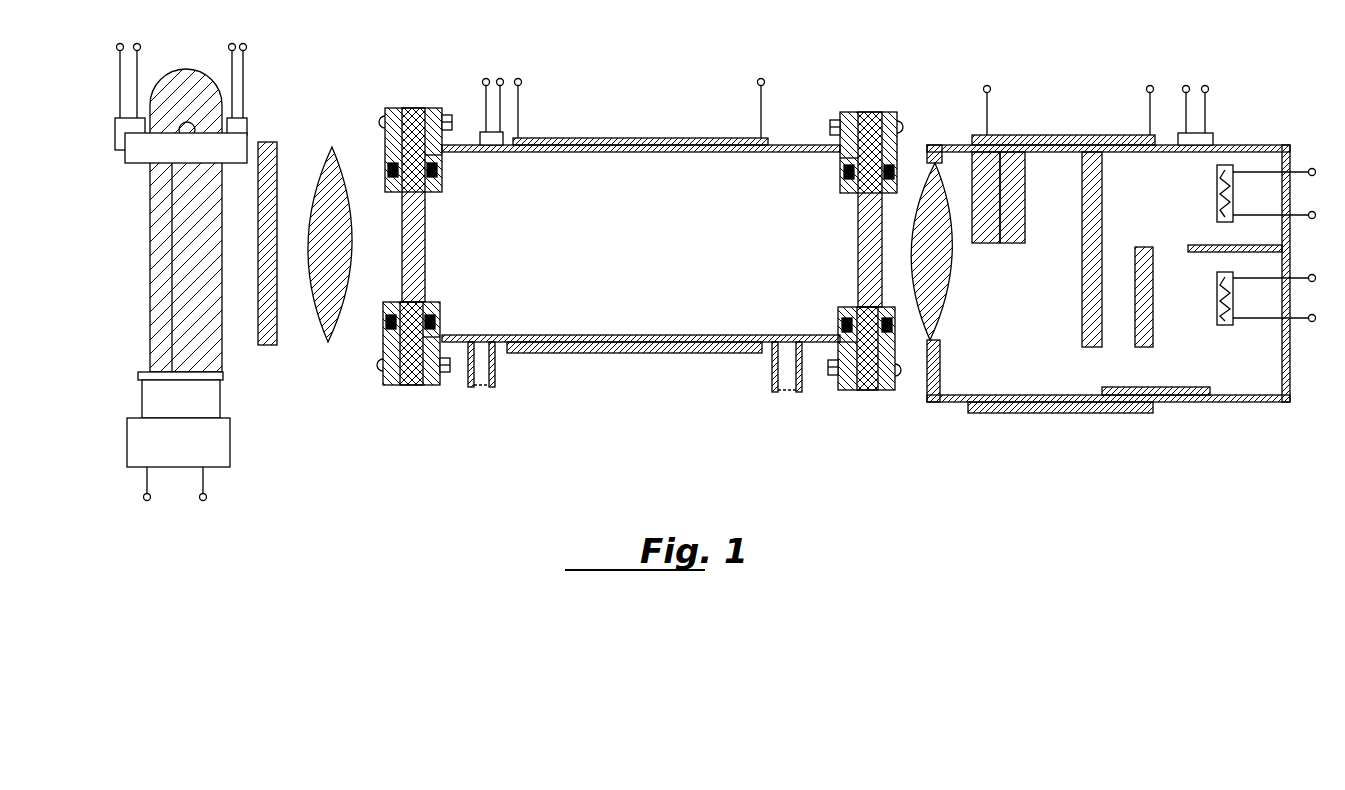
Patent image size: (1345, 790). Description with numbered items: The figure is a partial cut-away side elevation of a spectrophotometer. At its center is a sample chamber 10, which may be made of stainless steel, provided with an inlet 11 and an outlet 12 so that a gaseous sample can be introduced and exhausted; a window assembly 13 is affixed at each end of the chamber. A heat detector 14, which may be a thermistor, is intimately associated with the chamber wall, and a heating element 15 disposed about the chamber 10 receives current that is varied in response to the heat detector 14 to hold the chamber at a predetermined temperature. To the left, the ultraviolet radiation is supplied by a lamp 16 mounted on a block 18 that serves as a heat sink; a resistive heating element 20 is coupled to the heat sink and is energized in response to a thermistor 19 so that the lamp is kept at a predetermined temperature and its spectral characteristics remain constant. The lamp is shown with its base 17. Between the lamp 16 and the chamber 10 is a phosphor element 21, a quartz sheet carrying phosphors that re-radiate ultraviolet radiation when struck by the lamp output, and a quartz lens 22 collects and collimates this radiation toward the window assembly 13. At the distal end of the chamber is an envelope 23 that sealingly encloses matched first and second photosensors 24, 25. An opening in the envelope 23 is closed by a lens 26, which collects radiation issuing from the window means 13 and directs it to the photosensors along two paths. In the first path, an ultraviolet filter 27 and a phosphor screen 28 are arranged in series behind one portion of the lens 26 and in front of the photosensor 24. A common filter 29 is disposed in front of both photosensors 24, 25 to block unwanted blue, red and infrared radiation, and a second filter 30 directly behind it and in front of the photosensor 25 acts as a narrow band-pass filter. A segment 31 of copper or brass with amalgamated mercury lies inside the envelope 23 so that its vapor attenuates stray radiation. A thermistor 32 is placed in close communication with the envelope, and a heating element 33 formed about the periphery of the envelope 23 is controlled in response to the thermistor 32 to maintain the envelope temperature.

The sample chamber 10 is at (788, 148).
The inlet 11 is at (485, 388).
The outlet 12 is at (790, 393).
The window assembly 13 is at (405, 108).
The heat detector 14 is at (482, 132).
The heating element 15 is at (585, 138).
The lamp 16 is at (185, 75).
The lamp base 17 is at (222, 448).
The block 18 is at (140, 150).
The thermistor 19 is at (245, 126).
The resistive heating element 20 is at (117, 122).
The phosphor element 21 is at (268, 342).
The quartz lens 22 is at (337, 312).
The envelope 23 is at (1280, 147).
The first photosensor 24 is at (1216, 191).
The second photosensor 25 is at (1216, 297).
The lens 26 is at (950, 283).
The ultraviolet filter 27 is at (990, 233).
The phosphor screen 28 is at (1022, 228).
The common filter 29 is at (1102, 213).
The second filter 30 is at (1155, 325).
The segment 31 is at (1195, 390).
The thermistor 32 is at (1205, 140).
The heating element 33 is at (1052, 135).